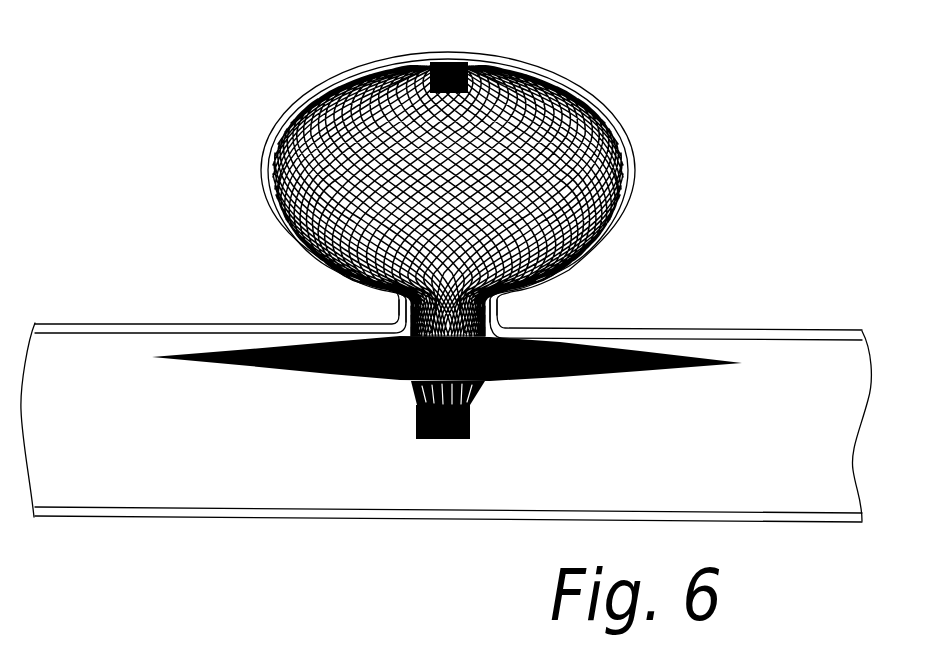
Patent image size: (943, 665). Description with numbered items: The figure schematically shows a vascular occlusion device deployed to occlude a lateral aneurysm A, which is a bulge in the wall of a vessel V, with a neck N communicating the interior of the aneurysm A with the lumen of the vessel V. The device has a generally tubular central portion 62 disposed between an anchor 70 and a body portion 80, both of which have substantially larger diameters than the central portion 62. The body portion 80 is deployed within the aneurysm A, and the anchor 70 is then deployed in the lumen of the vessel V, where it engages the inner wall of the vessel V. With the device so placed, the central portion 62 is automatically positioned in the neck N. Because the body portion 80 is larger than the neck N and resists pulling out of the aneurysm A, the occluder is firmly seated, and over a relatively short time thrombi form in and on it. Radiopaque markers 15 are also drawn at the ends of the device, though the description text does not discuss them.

The radiopaque marker band 15 is at (452, 62).
The central portion 62 is at (405, 305).
The anchor 70 is at (594, 184).
The body portion 80 is at (437, 170).
The aneurysm A is at (593, 94).
The neck N is at (486, 321).
The vessel V is at (97, 451).